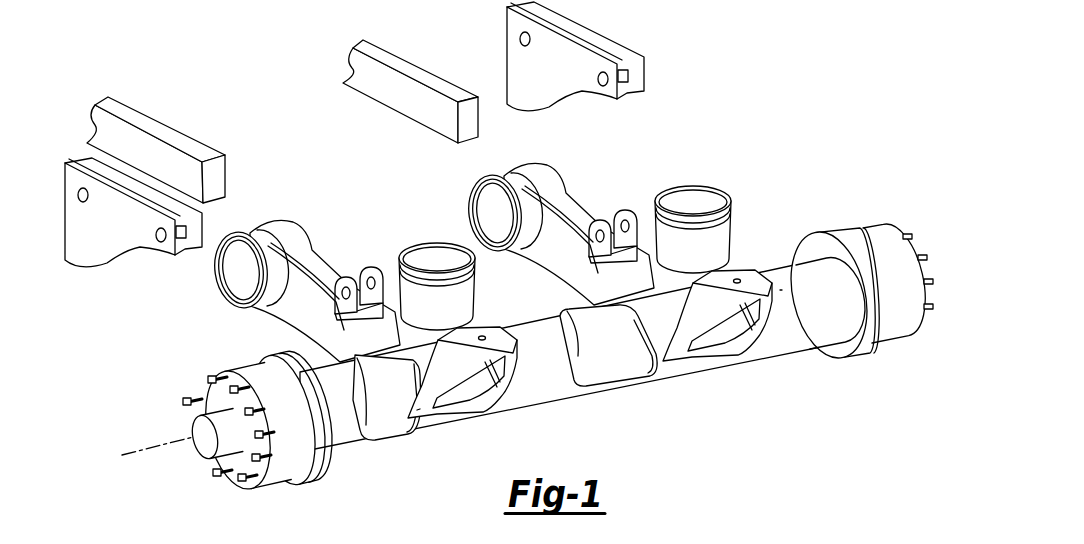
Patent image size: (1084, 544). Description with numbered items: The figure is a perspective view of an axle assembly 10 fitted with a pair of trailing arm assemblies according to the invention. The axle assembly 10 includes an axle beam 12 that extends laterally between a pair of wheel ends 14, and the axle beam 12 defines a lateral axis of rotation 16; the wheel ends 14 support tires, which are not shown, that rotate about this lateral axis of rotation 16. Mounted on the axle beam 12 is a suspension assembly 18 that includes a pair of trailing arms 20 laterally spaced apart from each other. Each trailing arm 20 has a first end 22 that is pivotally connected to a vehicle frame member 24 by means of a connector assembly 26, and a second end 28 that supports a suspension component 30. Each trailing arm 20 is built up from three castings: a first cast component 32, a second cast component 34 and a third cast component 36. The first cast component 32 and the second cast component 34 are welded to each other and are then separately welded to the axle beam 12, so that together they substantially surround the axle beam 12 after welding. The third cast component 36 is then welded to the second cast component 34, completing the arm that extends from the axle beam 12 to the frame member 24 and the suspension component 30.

The axle assembly 10 is at (577, 419).
The axle beam 12 is at (350, 432).
The wheel ends 14 is at (203, 408).
The lateral axis of rotation 16 is at (152, 448).
The suspension assembly 18 is at (177, 378).
The trailing arms 20 is at (300, 316).
The first end 22 is at (268, 226).
The vehicle frame member 24 is at (172, 137).
The connector assembly 26 is at (123, 230).
The second end 28 is at (417, 410).
The suspension component 30 is at (428, 258).
The first cast component 32 is at (472, 417).
The second cast component 34 is at (383, 348).
The third cast component 36 is at (302, 252).